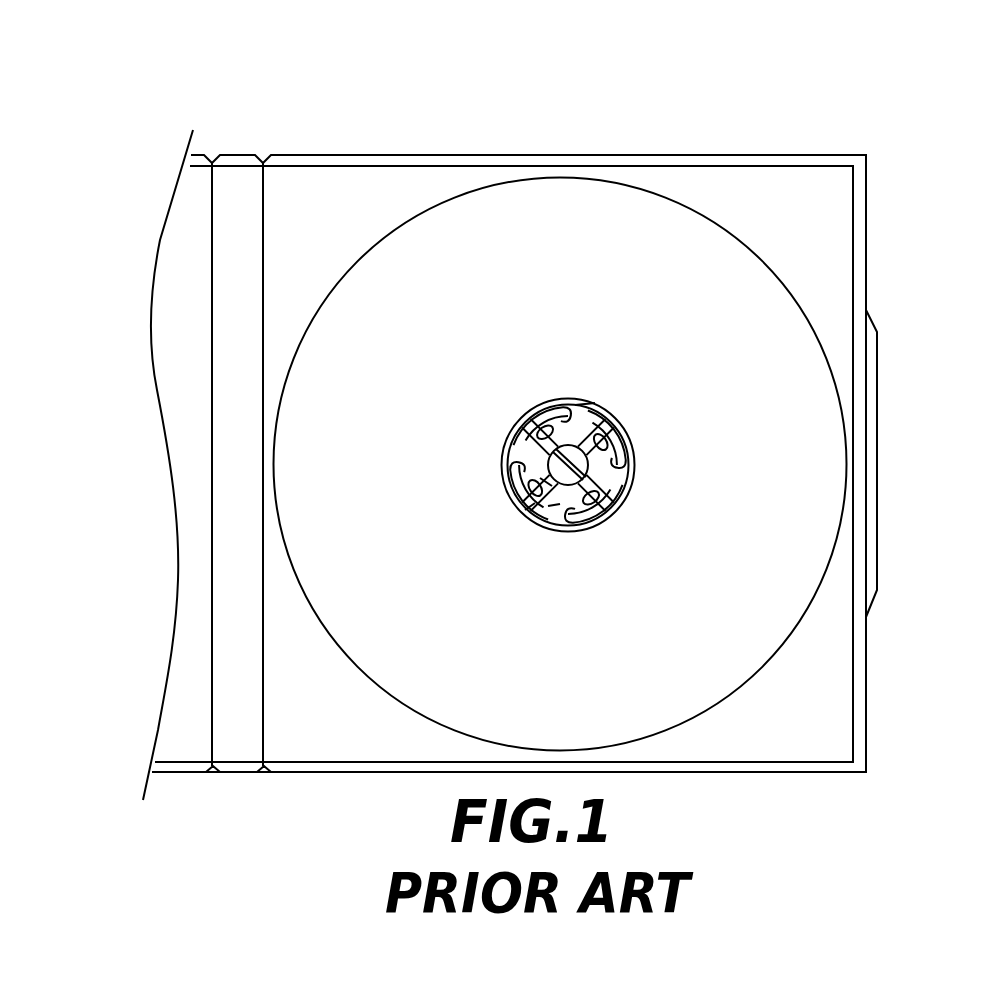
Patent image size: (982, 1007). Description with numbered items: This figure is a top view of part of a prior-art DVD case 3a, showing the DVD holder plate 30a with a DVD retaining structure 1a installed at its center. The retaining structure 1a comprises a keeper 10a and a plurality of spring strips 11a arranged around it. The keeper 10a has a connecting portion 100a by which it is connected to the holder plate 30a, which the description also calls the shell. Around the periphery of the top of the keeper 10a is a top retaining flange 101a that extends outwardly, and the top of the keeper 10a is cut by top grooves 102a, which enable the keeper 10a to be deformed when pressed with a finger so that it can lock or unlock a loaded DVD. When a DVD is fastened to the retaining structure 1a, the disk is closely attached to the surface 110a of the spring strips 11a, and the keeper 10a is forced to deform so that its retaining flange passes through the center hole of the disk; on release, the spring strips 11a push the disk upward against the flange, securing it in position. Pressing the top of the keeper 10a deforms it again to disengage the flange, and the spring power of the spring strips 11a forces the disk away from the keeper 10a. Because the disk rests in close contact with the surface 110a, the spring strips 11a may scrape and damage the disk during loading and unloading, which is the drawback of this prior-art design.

The DVD case 3a is at (663, 127).
The DVD holder plate 30a is at (820, 246).
The DVD retaining structure 1a is at (533, 392).
The keeper 10a is at (588, 466).
The connecting portion 100a is at (576, 513).
The top grooves 102a is at (584, 410).
The top retaining flange 101a is at (548, 480).
The surface of the spring strips 110a is at (553, 505).
The spring strips 11a is at (530, 507).